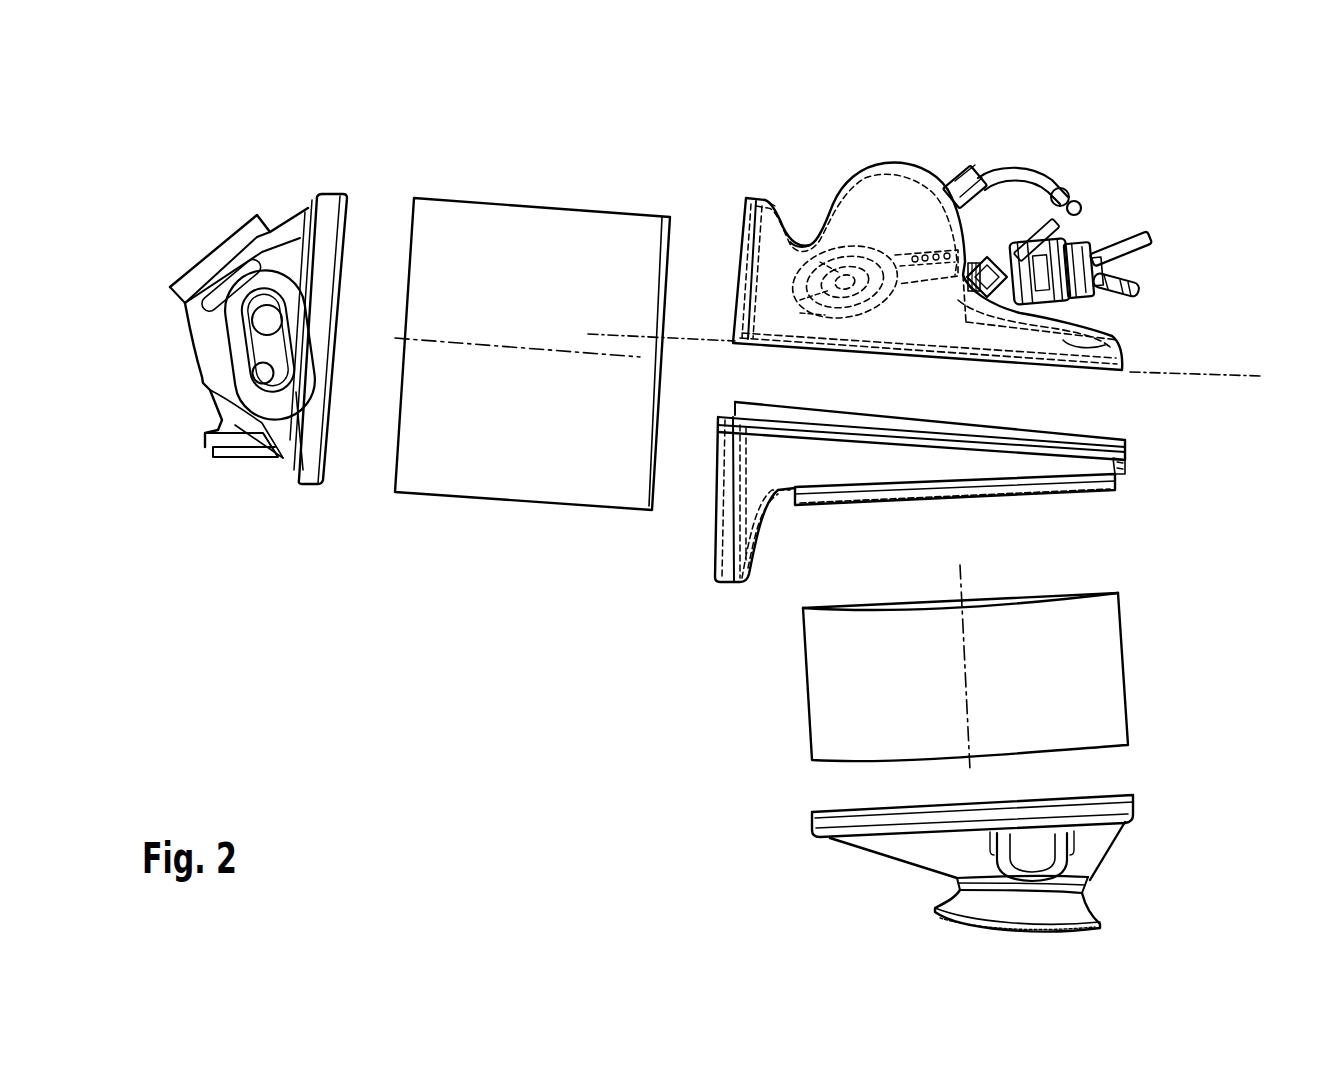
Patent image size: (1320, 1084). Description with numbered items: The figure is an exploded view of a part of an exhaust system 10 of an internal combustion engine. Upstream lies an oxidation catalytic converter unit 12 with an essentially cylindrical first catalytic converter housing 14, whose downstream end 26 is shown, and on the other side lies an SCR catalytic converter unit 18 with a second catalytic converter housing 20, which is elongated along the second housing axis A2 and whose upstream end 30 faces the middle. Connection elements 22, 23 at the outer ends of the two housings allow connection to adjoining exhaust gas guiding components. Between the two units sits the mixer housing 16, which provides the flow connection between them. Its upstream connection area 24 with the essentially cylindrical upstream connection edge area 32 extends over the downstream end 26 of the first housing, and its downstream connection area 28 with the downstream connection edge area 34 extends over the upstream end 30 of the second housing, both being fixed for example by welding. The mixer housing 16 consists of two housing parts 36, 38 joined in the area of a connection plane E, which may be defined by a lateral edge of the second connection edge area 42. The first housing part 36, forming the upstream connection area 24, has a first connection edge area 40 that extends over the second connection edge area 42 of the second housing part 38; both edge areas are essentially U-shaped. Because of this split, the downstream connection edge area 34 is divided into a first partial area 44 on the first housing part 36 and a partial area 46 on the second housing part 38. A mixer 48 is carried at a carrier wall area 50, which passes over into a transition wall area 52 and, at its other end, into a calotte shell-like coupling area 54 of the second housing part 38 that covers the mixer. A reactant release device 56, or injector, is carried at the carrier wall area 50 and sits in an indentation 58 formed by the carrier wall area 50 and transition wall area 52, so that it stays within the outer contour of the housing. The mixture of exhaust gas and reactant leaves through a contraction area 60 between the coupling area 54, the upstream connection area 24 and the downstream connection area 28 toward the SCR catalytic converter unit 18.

The exhaust system 10 is at (1170, 142).
The oxidation catalytic converter unit 12 is at (1163, 705).
The first catalytic converter housing 14 is at (805, 698).
The mixer housing 16 is at (1135, 212).
The SCR catalytic converter unit 18 is at (443, 530).
The second catalytic converter housing 20 is at (455, 198).
The connection element 22 is at (1110, 857).
The connection element 23 is at (203, 358).
The upstream connection area 24 is at (1140, 498).
The downstream end 26 is at (1125, 603).
The downstream connection area 28 is at (677, 553).
The upstream end 30 is at (662, 215).
The upstream connection edge area 32 is at (1098, 495).
The downstream connection edge area 34 is at (722, 585).
The first housing part 36 is at (1132, 465).
The second housing part 38 is at (770, 200).
The first connection edge area 40 is at (1125, 445).
The second connection edge area 42 is at (848, 325).
The first partial area 44 is at (715, 505).
The partial area 46 is at (733, 272).
The mixer 48 is at (874, 232).
The carrier wall area 50 is at (1020, 320).
The transition wall area 52 is at (1117, 352).
The coupling area 54 is at (938, 180).
The reactant release device 56 is at (1142, 247).
The indentation 58 is at (1000, 228).
The contraction area 60 is at (803, 208).
The second housing axis A2 is at (388, 345).
The connection plane E is at (1238, 373).